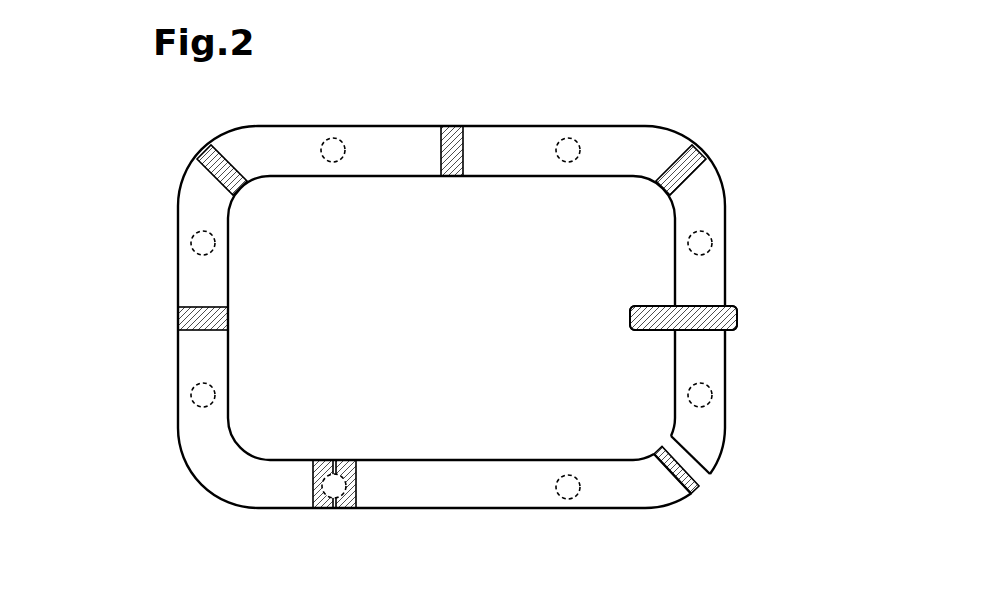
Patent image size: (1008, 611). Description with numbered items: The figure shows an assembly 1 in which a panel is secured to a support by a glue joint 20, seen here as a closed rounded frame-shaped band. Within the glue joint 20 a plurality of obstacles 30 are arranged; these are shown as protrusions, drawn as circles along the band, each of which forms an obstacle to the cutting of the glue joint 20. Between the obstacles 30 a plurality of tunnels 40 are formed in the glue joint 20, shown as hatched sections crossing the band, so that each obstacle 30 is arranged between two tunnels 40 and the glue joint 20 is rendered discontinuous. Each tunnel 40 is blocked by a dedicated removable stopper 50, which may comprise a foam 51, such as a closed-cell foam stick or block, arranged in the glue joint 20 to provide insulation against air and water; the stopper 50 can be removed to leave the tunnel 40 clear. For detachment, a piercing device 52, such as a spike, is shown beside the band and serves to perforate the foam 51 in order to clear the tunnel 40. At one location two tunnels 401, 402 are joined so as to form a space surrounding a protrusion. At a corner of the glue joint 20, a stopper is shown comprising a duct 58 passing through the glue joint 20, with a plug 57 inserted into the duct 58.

The assembly 1 is at (614, 527).
The glue joint 20 is at (712, 423).
The obstacle 30 is at (572, 138).
The tunnel 40 is at (234, 184).
The removable stopper 50 is at (442, 355).
The foam 51 is at (442, 355).
The piercing device 52 is at (655, 306).
The plug 57 is at (668, 442).
The duct 58 is at (692, 463).
The tunnel 401 is at (350, 473).
The tunnel 402 is at (327, 497).